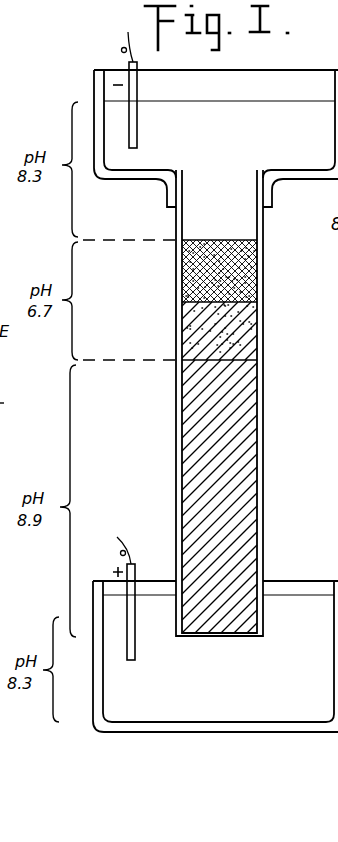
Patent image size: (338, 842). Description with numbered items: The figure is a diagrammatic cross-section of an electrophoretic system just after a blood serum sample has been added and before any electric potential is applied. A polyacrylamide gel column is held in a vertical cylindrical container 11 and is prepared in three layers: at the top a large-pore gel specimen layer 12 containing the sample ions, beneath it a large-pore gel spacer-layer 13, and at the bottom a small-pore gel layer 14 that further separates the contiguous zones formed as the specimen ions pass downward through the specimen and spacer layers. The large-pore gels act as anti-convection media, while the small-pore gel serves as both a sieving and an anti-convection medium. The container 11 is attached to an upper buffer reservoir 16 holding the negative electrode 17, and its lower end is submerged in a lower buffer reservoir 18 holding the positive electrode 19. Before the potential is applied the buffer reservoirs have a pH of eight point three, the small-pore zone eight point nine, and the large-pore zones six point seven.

The cylindrical container 11 is at (262, 447).
The large-pore gel specimen layer 12 is at (238, 278).
The large-pore gel spacer-layer 13 is at (238, 335).
The small-pore gel layer 14 is at (238, 393).
The upper buffer reservoir 16 is at (216, 121).
The negative electrode 17 is at (131, 90).
The lower buffer reservoir 18 is at (326, 732).
The positive electrode 19 is at (135, 577).